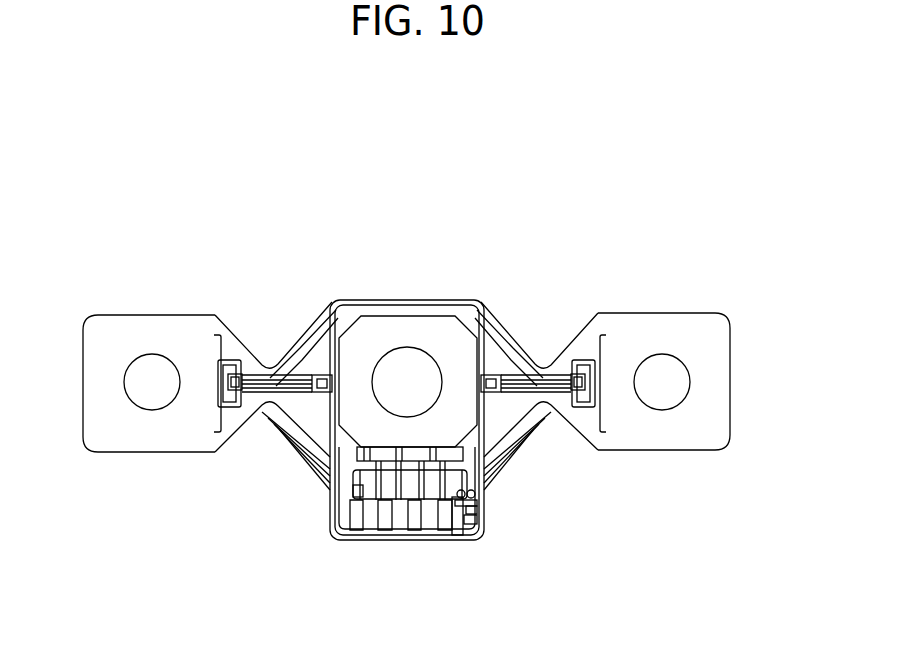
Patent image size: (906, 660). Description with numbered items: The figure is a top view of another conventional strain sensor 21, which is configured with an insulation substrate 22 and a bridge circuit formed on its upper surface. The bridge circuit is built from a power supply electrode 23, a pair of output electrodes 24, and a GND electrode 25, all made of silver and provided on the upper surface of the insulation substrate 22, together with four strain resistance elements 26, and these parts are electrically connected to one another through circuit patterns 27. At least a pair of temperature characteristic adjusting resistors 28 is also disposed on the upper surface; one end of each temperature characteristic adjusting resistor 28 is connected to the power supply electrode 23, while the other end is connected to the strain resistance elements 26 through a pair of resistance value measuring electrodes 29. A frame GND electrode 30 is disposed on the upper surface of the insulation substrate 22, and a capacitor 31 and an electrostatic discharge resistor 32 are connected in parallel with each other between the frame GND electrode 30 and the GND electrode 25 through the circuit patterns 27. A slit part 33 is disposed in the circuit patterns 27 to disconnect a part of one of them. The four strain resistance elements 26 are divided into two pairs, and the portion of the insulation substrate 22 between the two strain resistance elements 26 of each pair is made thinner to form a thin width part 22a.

The strain sensor 21 is at (166, 110).
The insulation substrate 22 is at (473, 302).
The thin width part 22a is at (267, 363).
The power supply electrode 23 is at (393, 540).
The output electrodes 24 is at (358, 530).
The GND electrode 25 is at (453, 540).
The strain resistance elements 26 is at (217, 340).
The circuit patterns 27 is at (307, 374).
The temperature characteristic adjusting resistors 28 is at (470, 460).
The resistance value measuring electrodes 29 is at (360, 460).
The frame GND electrode 30 is at (468, 528).
The capacitor 31 is at (482, 493).
The electrostatic discharge resistor 32 is at (475, 502).
The slit part 33 is at (480, 512).